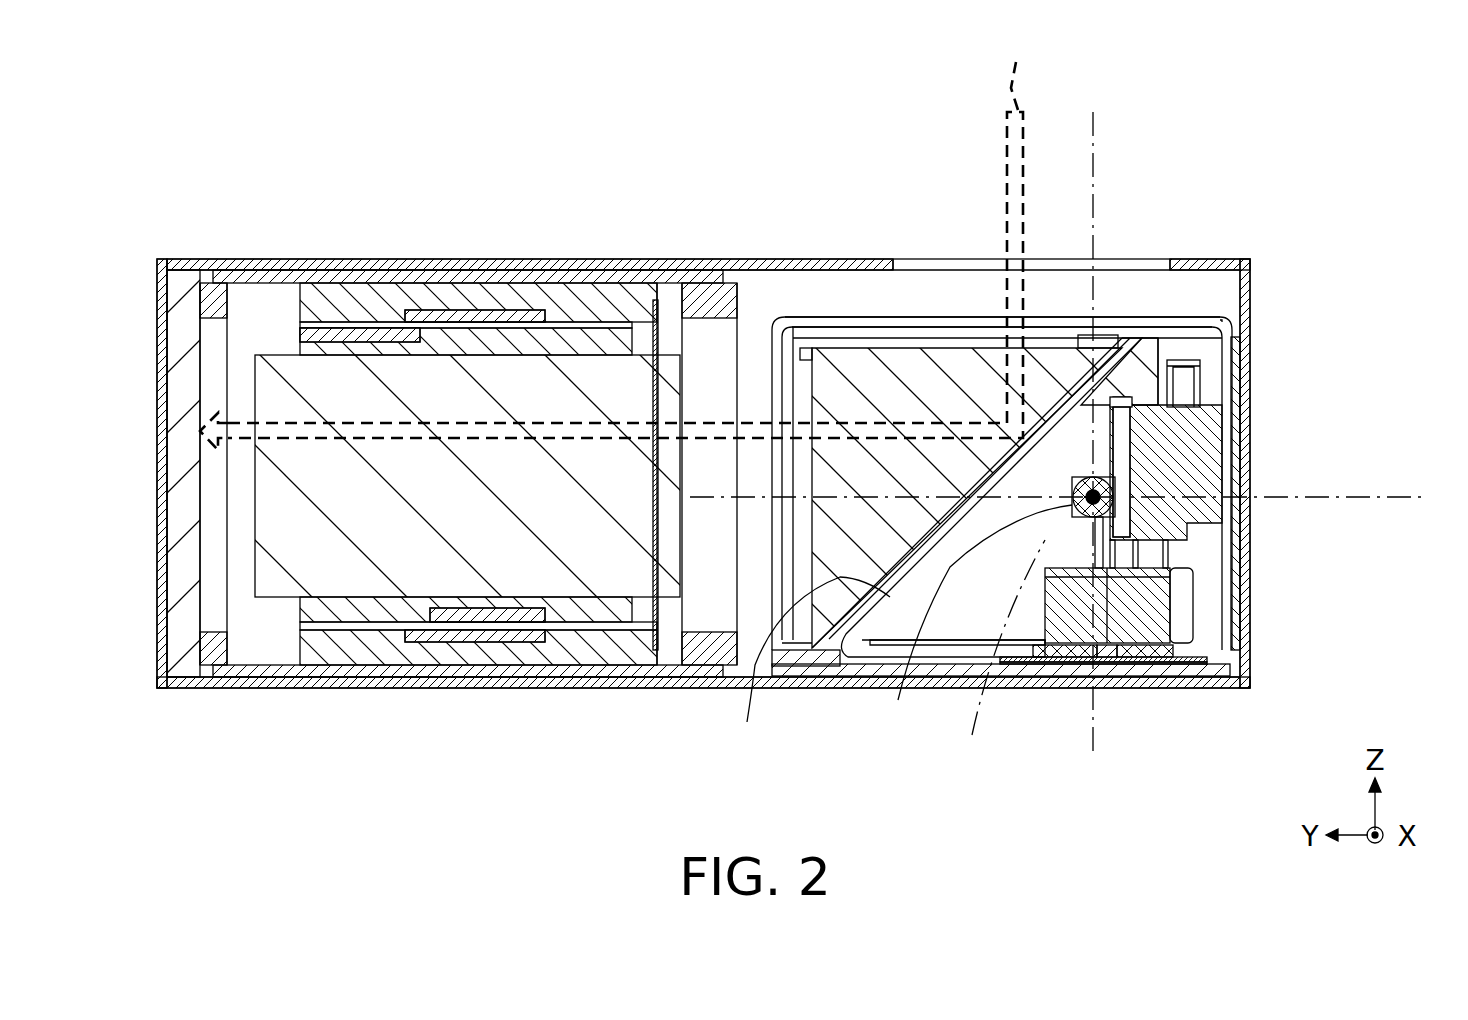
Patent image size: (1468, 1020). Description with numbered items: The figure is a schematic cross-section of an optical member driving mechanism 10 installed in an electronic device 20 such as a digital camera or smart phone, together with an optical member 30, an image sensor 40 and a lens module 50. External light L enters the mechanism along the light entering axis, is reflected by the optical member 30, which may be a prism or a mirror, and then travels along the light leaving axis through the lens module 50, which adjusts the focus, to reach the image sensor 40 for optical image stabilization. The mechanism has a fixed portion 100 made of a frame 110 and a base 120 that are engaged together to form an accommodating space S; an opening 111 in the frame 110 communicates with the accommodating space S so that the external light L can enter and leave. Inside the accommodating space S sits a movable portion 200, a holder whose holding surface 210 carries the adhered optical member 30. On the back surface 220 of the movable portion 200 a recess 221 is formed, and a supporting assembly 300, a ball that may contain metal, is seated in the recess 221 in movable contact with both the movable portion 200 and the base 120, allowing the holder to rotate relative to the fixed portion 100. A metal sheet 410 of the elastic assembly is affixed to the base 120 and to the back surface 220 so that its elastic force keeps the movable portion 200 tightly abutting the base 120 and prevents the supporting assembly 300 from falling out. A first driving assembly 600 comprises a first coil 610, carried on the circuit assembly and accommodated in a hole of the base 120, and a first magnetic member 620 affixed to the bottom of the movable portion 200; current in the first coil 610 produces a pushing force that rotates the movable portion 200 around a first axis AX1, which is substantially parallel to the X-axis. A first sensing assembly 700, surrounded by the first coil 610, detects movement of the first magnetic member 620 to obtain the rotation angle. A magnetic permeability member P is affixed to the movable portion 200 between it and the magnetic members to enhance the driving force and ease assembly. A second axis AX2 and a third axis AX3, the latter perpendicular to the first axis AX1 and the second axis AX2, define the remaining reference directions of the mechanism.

The optical member driving mechanism 10 is at (1222, 310).
The electronic device 20 is at (205, 256).
The optical member 30 is at (853, 368).
The image sensor 40 is at (172, 410).
The lens module 50 is at (290, 655).
The fixed portion 100 is at (1090, 511).
The frame 110 is at (1236, 622).
The opening 111 is at (1082, 322).
The base 120 is at (1056, 664).
The movable portion 200 is at (970, 476).
The holding surface 210 is at (748, 690).
The back surface 220 is at (1215, 407).
The recess 221 is at (1130, 462).
The supporting assembly 300 is at (898, 690).
The metal sheet 410 is at (1100, 437).
The first driving assembly 600 is at (1144, 717).
The first coil 610 is at (1148, 662).
The first magnetic member 620 is at (1160, 654).
The first sensing assembly 700 is at (1107, 658).
The external light L is at (612, 237).
The accommodating space S is at (1213, 375).
The magnetic permeability member P is at (1172, 571).
The first axis AX1 is at (991, 654).
The second axis AX2 is at (1097, 120).
The third axis AX3 is at (1418, 494).